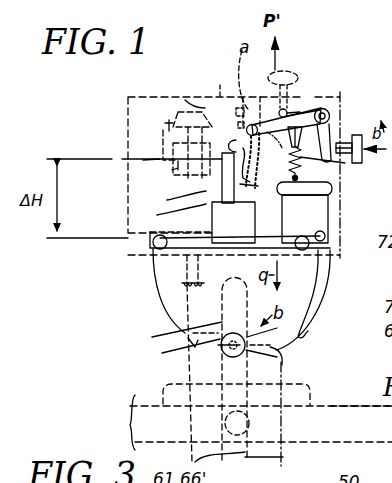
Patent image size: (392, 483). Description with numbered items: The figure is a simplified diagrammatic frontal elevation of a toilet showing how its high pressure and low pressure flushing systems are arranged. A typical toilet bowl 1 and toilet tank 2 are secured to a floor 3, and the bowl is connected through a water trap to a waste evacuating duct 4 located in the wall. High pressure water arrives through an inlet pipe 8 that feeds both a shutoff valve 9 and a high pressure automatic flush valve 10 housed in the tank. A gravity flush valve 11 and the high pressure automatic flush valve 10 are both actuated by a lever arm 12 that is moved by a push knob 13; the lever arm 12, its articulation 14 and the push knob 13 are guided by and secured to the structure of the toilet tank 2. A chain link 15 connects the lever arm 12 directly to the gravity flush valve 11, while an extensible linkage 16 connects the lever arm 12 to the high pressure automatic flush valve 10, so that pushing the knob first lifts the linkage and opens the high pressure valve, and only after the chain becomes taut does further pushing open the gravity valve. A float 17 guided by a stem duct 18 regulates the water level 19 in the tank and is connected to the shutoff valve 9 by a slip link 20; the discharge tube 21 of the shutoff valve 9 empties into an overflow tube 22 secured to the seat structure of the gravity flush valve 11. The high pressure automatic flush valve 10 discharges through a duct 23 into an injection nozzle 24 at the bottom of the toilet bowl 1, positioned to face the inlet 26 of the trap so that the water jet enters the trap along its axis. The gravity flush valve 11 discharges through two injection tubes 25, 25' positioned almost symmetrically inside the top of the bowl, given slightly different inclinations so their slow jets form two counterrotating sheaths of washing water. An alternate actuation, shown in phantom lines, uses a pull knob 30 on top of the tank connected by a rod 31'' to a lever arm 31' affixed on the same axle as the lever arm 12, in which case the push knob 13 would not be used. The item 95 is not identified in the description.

The toilet bowl 1 is at (162, 307).
The toilet tank 2 is at (166, 93).
The floor 3 is at (338, 405).
The waste evacuating duct 4 is at (283, 457).
The inlet pipe 8 is at (187, 268).
The shutoff valve 9 is at (196, 104).
The high pressure automatic flush valve 10 is at (312, 227).
The gravity flush valve 11 is at (240, 230).
The lever arm 12 is at (265, 97).
The push knob 13 is at (357, 135).
The articulation 14 is at (330, 108).
The chain link 15 is at (315, 161).
The extensible linkage 16 is at (345, 163).
The float 17 is at (172, 170).
The stem duct 18 is at (157, 215).
The water level 19 is at (143, 160).
The slip link 20 is at (168, 126).
The discharge tube 21 is at (220, 92).
The overflow tube 22 is at (167, 200).
The duct 23 is at (322, 286).
The injection nozzle 24 is at (220, 341).
The injection tube 25 is at (209, 258).
The injection tube 25' is at (343, 259).
The inlet 26 is at (165, 335).
The pull knob 30 is at (288, 71).
The lever arm 31' is at (318, 87).
The rod 31'' is at (313, 80).
The guide slot 95 is at (190, 425).